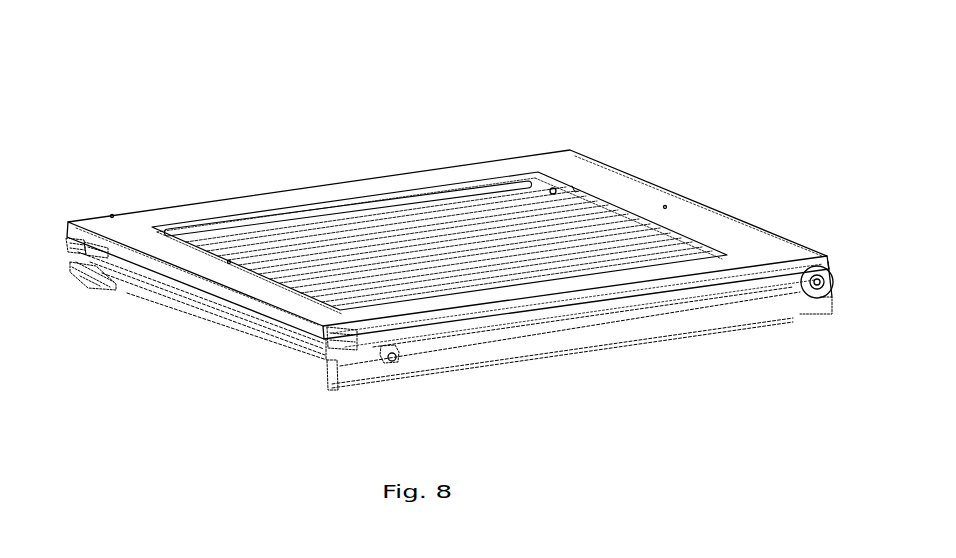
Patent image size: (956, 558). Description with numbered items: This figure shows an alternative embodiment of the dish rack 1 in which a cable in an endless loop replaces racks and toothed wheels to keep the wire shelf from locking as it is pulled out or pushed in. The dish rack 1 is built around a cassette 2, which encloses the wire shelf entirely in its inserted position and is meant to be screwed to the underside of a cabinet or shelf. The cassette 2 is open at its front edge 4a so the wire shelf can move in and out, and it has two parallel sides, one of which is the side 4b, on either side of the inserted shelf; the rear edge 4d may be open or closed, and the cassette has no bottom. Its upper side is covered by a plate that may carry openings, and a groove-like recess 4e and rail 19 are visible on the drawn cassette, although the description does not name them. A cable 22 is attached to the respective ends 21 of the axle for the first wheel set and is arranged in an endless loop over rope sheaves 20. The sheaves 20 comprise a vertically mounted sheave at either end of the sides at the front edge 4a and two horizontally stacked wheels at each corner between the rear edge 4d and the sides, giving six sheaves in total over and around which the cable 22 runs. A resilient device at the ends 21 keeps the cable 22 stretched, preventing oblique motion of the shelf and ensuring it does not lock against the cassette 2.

The dish rack 1 is at (597, 103).
The cassette 2 is at (323, 186).
The front edge 4a is at (668, 186).
The side 4b is at (597, 338).
The rear edge 4d is at (172, 268).
The recess with groove 4e is at (466, 168).
The rail 19 is at (138, 291).
The rope sheaves 20 is at (68, 258).
The ends of the axle 21 is at (390, 362).
The cable 22 is at (687, 315).